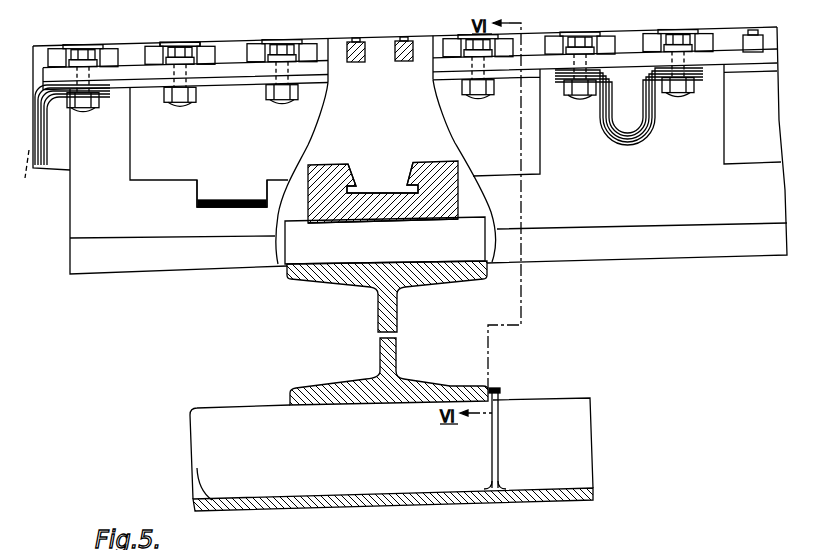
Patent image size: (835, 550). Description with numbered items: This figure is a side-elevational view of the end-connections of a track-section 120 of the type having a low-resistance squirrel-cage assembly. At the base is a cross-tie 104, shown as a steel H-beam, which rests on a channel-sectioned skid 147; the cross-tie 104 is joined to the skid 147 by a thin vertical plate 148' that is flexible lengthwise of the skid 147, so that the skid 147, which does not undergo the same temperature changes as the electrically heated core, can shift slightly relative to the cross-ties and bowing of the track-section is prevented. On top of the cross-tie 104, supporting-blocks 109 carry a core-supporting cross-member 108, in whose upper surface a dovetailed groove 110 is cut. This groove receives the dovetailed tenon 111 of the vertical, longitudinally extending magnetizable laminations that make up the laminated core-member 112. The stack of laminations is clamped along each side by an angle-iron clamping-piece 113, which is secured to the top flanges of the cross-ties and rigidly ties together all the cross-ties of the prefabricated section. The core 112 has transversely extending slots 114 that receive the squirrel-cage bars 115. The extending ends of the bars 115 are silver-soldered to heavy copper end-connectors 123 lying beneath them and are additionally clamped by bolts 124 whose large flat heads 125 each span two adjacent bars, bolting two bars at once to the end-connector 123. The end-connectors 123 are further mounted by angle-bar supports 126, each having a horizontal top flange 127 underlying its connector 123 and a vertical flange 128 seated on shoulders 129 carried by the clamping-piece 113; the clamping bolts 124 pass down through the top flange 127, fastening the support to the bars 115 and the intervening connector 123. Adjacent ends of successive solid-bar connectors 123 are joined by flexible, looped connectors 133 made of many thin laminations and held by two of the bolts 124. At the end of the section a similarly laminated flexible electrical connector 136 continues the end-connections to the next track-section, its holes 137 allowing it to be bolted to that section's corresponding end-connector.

The cross-tie 104 is at (399, 320).
The core-supporting cross-member 108 is at (452, 190).
The supporting-block 109 is at (476, 243).
The dovetailed groove 110 is at (378, 192).
The dovetailed tenon 111 is at (398, 196).
The laminated core-member 112 is at (339, 46).
The angle-iron clamping-piece 113 is at (77, 219).
The transversely extending slot 114 is at (408, 24).
The squirrel-cage bar 115 is at (150, 48).
The track-section 120 is at (77, 237).
The end-connector 123 is at (224, 70).
The bolt 124 is at (183, 106).
The flat head 125 is at (210, 40).
The angle-bar support 126 is at (125, 97).
The horizontal top flange 127 is at (152, 87).
The vertical flange 128 is at (130, 152).
The shoulder 129 is at (198, 199).
The flexible looped connector 133 is at (640, 140).
The flexible electrical connector 136 is at (62, 176).
The hole 137 is at (34, 173).
The channel-sectioned skid 147 is at (205, 470).
The thin vertical plate 148' is at (513, 438).